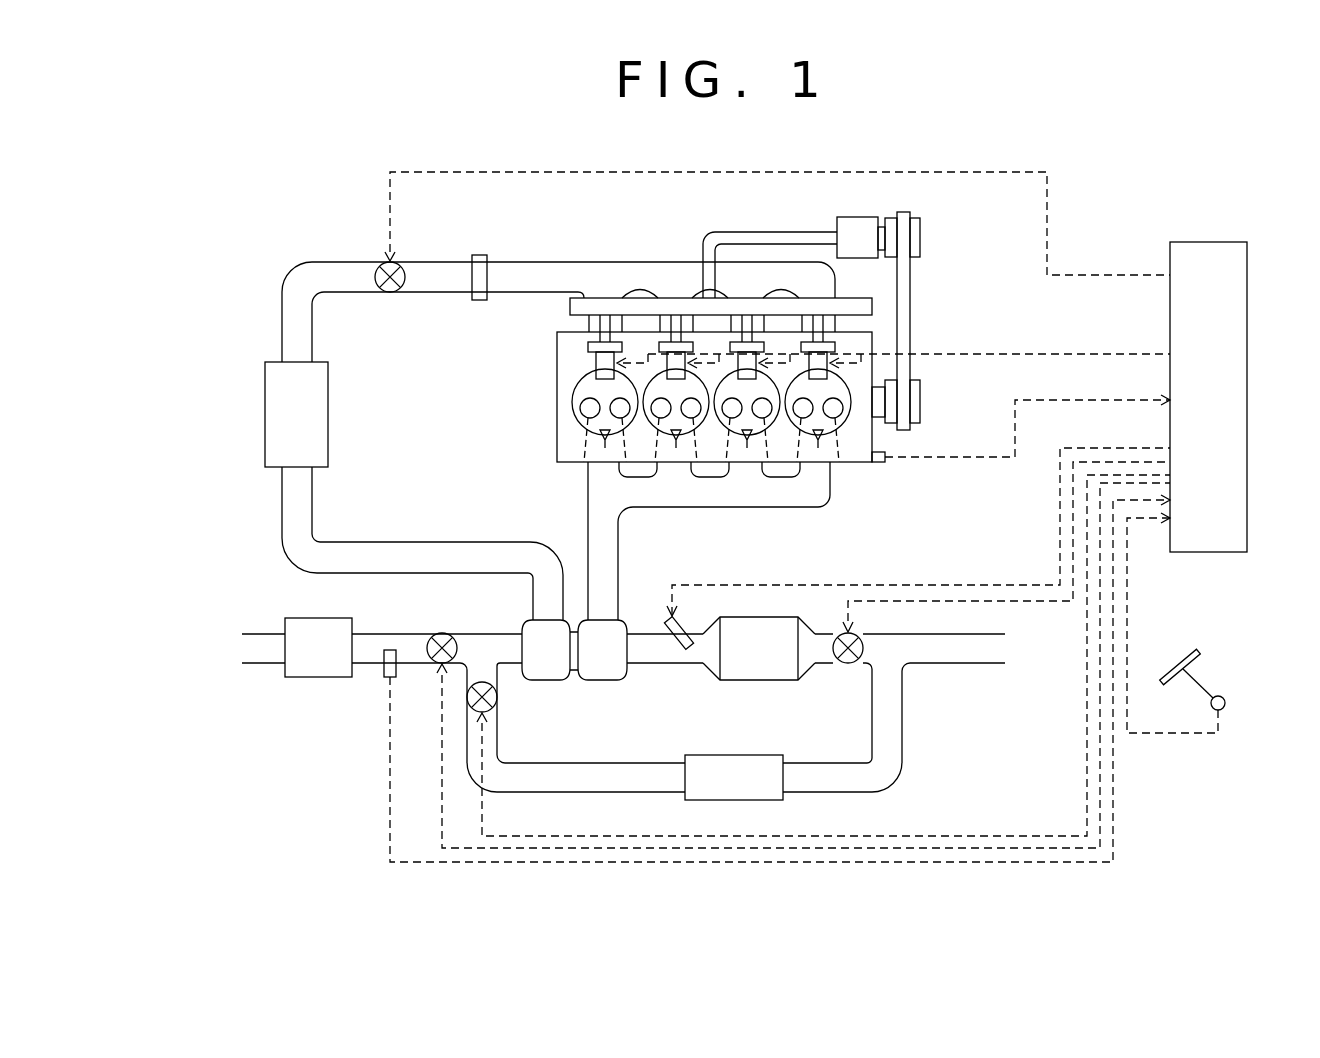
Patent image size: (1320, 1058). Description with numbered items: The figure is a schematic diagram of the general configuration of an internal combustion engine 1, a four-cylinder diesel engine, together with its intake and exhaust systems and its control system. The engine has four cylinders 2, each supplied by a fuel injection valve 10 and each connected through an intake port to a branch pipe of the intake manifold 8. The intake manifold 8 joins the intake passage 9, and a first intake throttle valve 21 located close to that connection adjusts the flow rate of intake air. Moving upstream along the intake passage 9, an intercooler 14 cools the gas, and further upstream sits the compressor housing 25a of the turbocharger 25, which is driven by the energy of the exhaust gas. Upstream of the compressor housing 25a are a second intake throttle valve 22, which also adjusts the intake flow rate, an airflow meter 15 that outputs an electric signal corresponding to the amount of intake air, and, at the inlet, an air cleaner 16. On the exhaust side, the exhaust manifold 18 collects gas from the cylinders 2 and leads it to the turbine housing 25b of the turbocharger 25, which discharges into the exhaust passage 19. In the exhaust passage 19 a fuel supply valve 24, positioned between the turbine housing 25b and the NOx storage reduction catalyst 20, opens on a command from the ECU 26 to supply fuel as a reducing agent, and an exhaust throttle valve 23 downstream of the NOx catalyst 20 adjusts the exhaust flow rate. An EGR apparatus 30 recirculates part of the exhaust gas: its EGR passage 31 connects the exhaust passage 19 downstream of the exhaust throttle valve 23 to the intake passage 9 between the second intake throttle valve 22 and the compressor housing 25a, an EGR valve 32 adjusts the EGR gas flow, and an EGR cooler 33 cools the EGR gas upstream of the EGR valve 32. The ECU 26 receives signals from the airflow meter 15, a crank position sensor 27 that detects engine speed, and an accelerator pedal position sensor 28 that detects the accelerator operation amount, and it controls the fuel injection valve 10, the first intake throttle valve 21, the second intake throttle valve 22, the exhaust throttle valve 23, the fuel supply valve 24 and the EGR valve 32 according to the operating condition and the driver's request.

The internal combustion engine 1 is at (951, 294).
The cylinder 2 is at (851, 405).
The intake manifold 8 is at (633, 263).
The intake passage 9 is at (282, 323).
The fuel injection valve 10 is at (596, 364).
The intercooler 14 is at (265, 413).
The airflow meter 15 is at (383, 667).
The air cleaner 16 is at (310, 678).
The exhaust manifold 18 is at (798, 512).
The exhaust passage 19 is at (586, 532).
The NOx storage reduction catalyst 20 is at (767, 681).
The first intake throttle valve 21 is at (390, 292).
The second intake throttle valve 22 is at (457, 633).
The exhaust throttle valve 23 is at (863, 653).
The fuel supply valve 24 is at (667, 623).
The turbocharger 25 is at (586, 692).
The compressor housing 25a is at (545, 680).
The turbine housing 25b is at (614, 675).
The ECU 26 is at (1208, 553).
The crank position sensor 27 is at (880, 465).
The accelerator pedal position sensor 28 is at (1224, 699).
The EGR apparatus 30 is at (818, 656).
The EGR passage 31 is at (903, 760).
The EGR valve 32 is at (497, 681).
The EGR cooler 33 is at (717, 800).